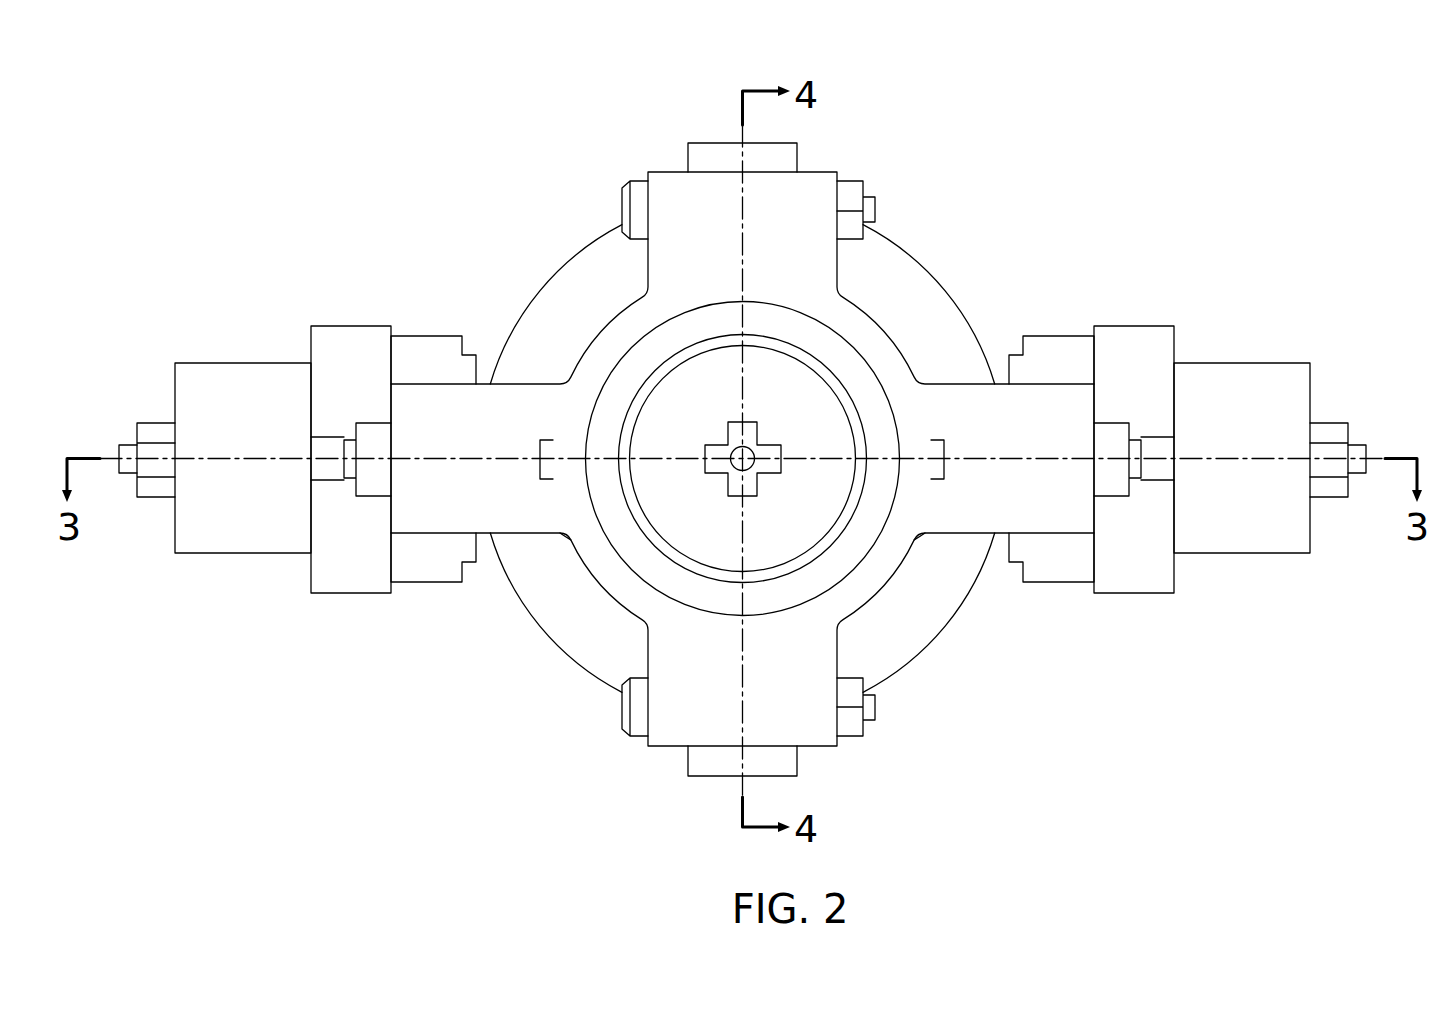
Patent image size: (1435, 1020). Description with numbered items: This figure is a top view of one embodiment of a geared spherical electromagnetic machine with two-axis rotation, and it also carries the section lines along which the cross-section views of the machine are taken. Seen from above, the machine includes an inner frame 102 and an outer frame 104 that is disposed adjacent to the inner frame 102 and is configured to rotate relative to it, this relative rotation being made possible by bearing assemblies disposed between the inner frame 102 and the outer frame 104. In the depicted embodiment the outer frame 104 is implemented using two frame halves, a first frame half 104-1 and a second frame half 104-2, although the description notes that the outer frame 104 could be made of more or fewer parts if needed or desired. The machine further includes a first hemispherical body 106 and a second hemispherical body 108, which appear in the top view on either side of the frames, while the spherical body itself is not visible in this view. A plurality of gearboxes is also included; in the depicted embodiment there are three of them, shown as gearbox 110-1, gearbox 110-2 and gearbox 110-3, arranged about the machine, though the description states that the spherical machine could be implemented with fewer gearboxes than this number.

The inner frame 102 is at (734, 104).
The outer frame 104 is at (742, 427).
The first frame half 104-1 is at (618, 600).
The second frame half 104-2 is at (828, 612).
The first hemispherical body 106 is at (568, 277).
The second hemispherical body 108 is at (923, 290).
The gearbox 110-1 is at (883, 551).
The gearbox 110-2 is at (297, 423).
The gearbox 110-3 is at (1187, 423).